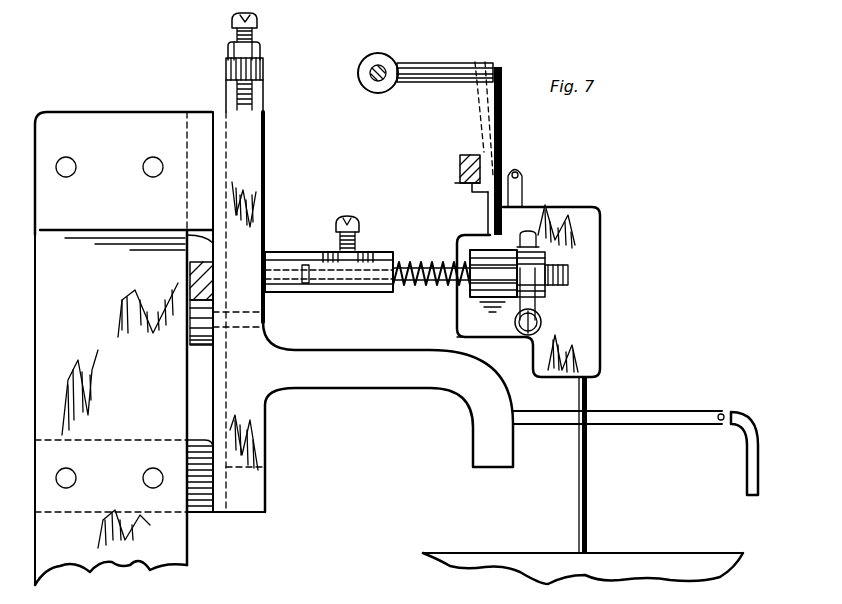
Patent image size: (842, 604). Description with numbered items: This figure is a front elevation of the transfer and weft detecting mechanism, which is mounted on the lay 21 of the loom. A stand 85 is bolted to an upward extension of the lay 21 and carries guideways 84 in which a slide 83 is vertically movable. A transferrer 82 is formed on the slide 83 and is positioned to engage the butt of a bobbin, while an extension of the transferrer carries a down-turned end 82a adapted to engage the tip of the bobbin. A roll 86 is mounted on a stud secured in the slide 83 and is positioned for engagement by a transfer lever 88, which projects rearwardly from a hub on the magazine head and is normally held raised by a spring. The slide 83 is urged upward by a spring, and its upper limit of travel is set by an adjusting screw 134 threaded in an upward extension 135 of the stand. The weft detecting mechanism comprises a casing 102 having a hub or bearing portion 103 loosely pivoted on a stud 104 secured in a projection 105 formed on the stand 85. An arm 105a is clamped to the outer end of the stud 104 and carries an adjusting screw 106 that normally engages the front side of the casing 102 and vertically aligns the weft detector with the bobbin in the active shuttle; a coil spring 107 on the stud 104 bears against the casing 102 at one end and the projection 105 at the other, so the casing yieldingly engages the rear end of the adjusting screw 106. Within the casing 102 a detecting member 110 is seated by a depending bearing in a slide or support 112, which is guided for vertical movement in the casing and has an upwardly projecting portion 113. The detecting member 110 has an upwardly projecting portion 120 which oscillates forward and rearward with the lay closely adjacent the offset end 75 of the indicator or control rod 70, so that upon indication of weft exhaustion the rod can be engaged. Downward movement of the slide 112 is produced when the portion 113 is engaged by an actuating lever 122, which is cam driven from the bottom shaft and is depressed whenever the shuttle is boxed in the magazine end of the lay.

The lay 21 is at (158, 545).
The indicator or control rod 70 is at (358, 73).
The offset end of the control rod 75 is at (440, 64).
The transferrer 82 is at (388, 417).
The down-turned end 82a is at (745, 447).
The slide 83 is at (268, 215).
The guideways 84 is at (249, 145).
The stand 85 is at (123, 181).
The roll 86 is at (206, 343).
The transfer lever 88 is at (188, 270).
The casing 102 is at (590, 240).
The hub or bearing portion 103 is at (472, 290).
The stud 104 is at (572, 278).
The projection 105 is at (285, 258).
The arm 105a is at (536, 307).
The adjusting screw 106 is at (492, 351).
The coil spring 107 is at (420, 262).
The detecting member 110 is at (590, 470).
The slide or support 112 is at (478, 205).
The upwardly projecting portion 113 is at (456, 186).
The upwardly projecting portion 120 is at (480, 92).
The actuating lever 122 is at (460, 164).
The adjusting screw 134 is at (256, 20).
The upward extension 135 is at (262, 86).